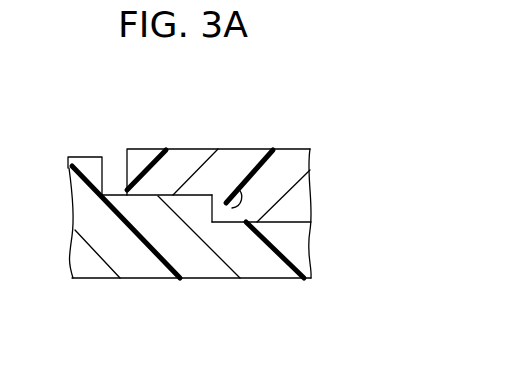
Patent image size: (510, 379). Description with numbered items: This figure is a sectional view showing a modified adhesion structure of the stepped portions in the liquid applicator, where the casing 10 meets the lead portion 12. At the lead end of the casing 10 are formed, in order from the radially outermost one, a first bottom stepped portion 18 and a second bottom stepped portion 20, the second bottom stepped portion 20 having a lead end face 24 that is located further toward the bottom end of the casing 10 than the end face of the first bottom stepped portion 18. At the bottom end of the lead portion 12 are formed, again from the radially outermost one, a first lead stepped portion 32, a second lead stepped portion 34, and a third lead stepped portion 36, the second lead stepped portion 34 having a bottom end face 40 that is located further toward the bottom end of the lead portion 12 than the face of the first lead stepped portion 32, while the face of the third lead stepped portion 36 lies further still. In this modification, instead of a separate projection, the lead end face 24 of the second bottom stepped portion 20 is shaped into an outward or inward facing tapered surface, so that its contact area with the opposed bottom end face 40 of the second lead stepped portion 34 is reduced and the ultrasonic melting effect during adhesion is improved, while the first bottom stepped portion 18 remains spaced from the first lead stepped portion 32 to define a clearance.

The casing 10 is at (254, 141).
The lead portion 12 is at (133, 290).
The first bottom stepped portion 18 is at (138, 160).
The second bottom stepped portion 20 is at (295, 207).
The lead end face 24 is at (227, 208).
The first lead stepped portion 32 is at (84, 160).
The second lead stepped portion 34 is at (199, 208).
The third lead stepped portion 36 is at (286, 233).
The bottom end face 40 is at (240, 183).